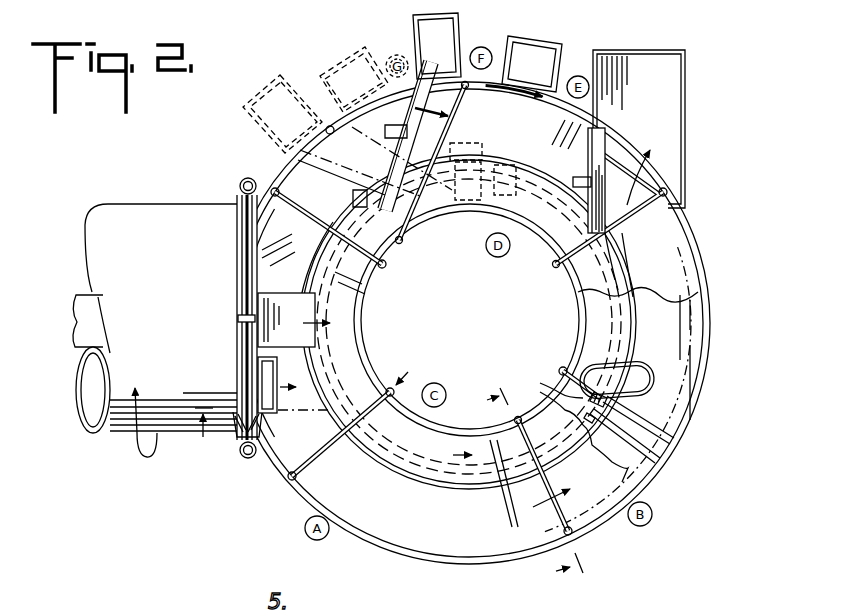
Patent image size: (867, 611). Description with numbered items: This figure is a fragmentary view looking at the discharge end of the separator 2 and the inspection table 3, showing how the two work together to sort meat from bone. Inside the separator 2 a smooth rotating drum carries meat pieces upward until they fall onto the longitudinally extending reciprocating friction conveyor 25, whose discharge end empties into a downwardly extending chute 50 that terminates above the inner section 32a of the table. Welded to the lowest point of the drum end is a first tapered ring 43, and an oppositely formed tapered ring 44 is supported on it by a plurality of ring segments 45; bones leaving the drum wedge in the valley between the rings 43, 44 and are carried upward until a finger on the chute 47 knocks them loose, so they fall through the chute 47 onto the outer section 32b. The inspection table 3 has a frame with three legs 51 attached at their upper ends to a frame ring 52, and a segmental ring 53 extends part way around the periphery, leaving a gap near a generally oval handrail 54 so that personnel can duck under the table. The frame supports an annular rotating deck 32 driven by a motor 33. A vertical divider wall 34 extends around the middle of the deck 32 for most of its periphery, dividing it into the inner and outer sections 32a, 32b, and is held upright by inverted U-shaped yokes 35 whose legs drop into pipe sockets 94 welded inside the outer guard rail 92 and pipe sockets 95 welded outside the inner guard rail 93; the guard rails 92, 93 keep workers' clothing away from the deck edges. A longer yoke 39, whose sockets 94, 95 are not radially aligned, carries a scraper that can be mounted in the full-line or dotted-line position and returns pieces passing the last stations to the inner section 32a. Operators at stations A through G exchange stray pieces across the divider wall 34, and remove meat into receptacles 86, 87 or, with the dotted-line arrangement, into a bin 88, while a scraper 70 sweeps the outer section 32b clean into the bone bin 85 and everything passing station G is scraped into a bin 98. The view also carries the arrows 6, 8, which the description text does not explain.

The separator 2 is at (143, 188).
The inspection table 3 is at (717, 338).
The direction of movement 6 is at (275, 415).
The section line 8 is at (526, 485).
The reciprocating friction conveyor 25 is at (80, 333).
The annular rotating deck 32 is at (428, 470).
The inner section 32a is at (440, 458).
The outer section 32b is at (372, 468).
The motor 33 is at (470, 320).
The vertical divider wall 34 is at (470, 487).
The yoke 35 is at (386, 263).
The yoke 39 is at (446, 108).
The first tapered ring 43 is at (240, 445).
The tapered ring 44 is at (259, 188).
The ring segments 45 is at (240, 181).
The chute 47 is at (273, 378).
The chute 50 is at (303, 333).
The legs 51 is at (483, 160).
The frame ring 52 is at (645, 470).
The segmental ring 53 is at (663, 450).
The handrail 54 is at (677, 414).
The scraper 70 is at (600, 145).
The bone bin 85 is at (652, 108).
The receptacle 86 is at (542, 80).
The receptacle 87 is at (452, 55).
The bin 88 is at (337, 70).
The guard rail 92 is at (413, 553).
The guard rail 93 is at (563, 332).
The pipe sockets 94 is at (457, 78).
The pipe sockets 95 is at (403, 238).
The bin 98 is at (243, 107).